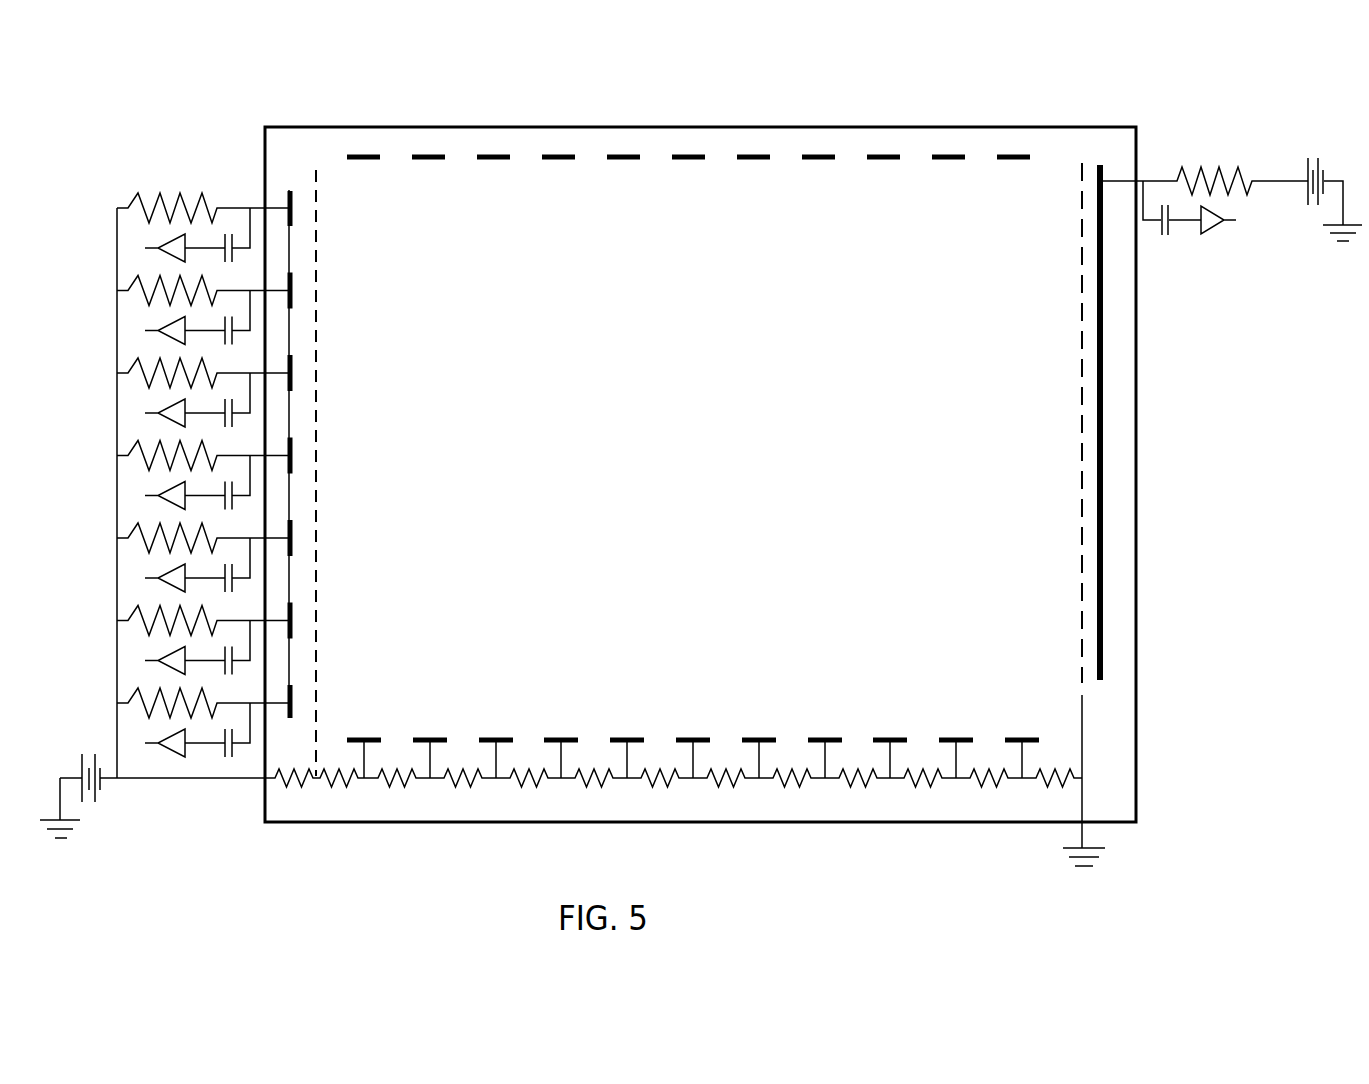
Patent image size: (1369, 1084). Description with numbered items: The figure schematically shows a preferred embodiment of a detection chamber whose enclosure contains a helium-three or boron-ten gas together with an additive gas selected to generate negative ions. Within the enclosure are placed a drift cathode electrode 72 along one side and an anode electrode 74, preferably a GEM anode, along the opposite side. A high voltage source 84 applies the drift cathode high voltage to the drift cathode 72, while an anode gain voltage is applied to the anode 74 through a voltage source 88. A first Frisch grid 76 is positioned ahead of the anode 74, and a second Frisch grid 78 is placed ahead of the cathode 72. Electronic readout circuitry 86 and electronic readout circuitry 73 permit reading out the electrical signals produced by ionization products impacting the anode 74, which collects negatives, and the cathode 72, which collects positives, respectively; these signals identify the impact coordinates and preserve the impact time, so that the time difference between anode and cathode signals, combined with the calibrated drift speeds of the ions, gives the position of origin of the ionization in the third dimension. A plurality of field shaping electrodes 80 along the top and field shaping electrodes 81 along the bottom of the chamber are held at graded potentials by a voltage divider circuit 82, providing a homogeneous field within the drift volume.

The drift cathode electrode 72 is at (288, 197).
The electronic readout circuitry 73 is at (147, 192).
The anode electrode 74 is at (1102, 402).
The first Frisch grid 76 is at (1078, 455).
The second Frisch grid 78 is at (330, 430).
The field shaping electrodes 80 is at (555, 150).
The field shaping electrodes 81 is at (613, 732).
The voltage divider circuit 82 is at (447, 788).
The high voltage source 84 is at (76, 755).
The electronic readout circuitry 86 is at (1208, 145).
The voltage source 88 is at (1318, 156).